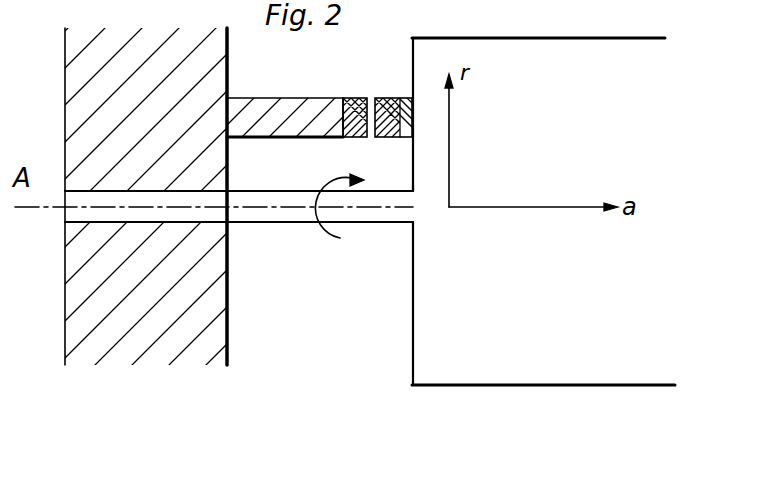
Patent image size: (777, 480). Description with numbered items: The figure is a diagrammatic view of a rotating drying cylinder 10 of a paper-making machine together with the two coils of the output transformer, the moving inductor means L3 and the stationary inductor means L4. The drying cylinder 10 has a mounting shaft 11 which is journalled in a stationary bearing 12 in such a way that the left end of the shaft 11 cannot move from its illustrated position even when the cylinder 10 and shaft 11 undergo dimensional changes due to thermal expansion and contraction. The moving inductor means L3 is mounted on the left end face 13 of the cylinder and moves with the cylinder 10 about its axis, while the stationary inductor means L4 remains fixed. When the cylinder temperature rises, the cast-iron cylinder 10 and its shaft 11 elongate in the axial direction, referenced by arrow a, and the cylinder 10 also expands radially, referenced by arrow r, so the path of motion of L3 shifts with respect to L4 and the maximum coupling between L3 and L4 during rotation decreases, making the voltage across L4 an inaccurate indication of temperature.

The drying cylinder 10 is at (435, 370).
The mounting shaft 11 is at (273, 223).
The stationary bearing 12 is at (228, 333).
The left end face 13 is at (413, 167).
The moving inductor means L3 is at (388, 98).
The stationary inductor means L4 is at (342, 98).